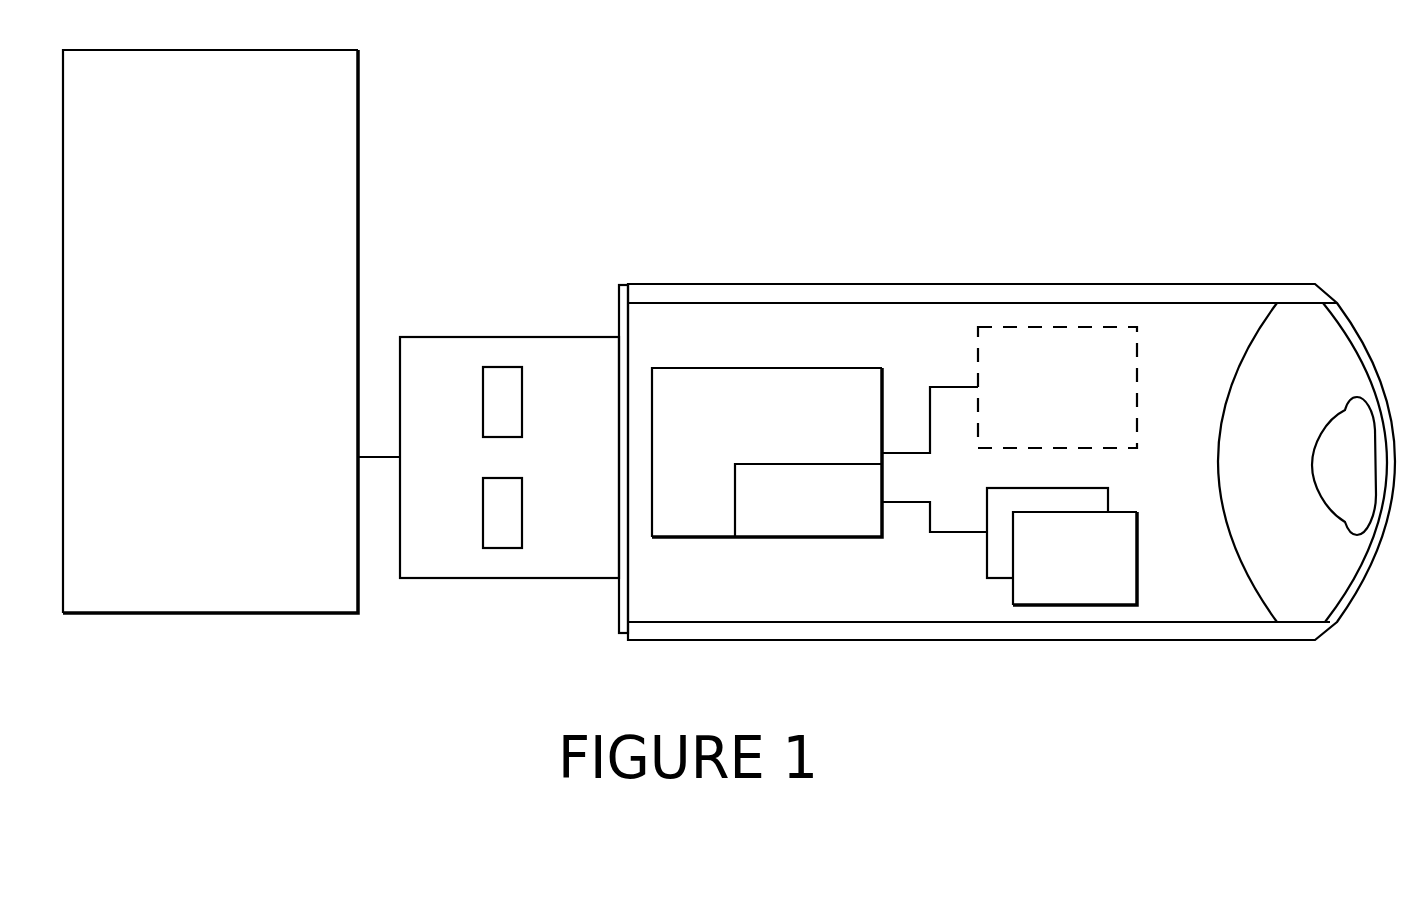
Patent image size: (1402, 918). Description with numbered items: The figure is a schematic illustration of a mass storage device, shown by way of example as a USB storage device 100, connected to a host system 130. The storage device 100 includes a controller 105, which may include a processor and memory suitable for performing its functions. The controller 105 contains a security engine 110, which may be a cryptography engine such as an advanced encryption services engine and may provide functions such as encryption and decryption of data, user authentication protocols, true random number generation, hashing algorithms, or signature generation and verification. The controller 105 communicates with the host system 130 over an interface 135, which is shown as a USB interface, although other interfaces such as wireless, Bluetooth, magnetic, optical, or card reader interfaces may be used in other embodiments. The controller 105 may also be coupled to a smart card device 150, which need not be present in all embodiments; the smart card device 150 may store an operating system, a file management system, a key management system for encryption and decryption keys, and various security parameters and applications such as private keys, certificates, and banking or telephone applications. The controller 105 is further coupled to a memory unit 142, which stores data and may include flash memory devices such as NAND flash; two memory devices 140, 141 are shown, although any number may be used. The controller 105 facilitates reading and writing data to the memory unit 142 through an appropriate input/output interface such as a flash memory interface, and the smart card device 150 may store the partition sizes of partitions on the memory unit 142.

The USB storage device 100 is at (808, 284).
The controller 105 is at (733, 368).
The security engine 110 is at (733, 518).
The host system 130 is at (360, 121).
The interface 135 is at (378, 457).
The memory device 140 is at (1137, 563).
The memory device 141 is at (1108, 502).
The memory unit 142 is at (992, 600).
The smart card device 150 is at (1137, 372).